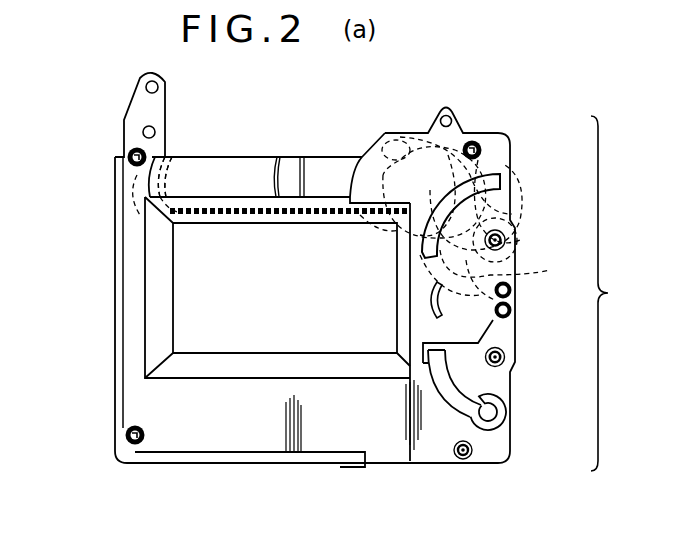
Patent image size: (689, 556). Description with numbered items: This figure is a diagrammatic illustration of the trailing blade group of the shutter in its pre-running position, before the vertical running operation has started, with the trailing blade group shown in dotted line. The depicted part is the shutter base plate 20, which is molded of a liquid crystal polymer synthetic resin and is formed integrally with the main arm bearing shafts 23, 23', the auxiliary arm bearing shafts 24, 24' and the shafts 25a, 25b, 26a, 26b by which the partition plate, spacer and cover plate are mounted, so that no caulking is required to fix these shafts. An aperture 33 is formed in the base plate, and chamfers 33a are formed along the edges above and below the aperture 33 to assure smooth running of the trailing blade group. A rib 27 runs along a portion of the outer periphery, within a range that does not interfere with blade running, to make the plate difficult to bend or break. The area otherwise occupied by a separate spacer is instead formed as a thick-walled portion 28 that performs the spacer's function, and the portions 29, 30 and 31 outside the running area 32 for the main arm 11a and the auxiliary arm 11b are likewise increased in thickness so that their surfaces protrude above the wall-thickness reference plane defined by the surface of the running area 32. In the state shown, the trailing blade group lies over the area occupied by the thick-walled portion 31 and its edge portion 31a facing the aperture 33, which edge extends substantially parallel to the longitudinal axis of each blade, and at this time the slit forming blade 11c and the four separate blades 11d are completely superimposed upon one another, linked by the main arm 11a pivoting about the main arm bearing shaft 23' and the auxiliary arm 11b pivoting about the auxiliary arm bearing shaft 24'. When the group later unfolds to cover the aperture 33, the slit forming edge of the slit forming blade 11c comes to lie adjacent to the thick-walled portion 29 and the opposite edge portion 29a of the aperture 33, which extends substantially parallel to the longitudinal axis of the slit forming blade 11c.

The shutter base plate 20 is at (618, 304).
The thick-walled portion 28 is at (130, 323).
The thick-walled portion 31 is at (340, 160).
The edge portion 31a is at (277, 157).
The running area 32 is at (497, 165).
The aperture 33 is at (207, 353).
The chamfers 33a is at (293, 357).
The rib 27 is at (248, 462).
The thick-walled portion 29 is at (310, 413).
The edge portion 29a is at (376, 380).
The thick-walled portion 30 is at (487, 380).
The shaft 26a is at (128, 160).
The shaft 26b is at (135, 444).
The shaft 25a is at (482, 151).
The shaft 25b is at (465, 459).
The main arm bearing shaft 23 is at (533, 365).
The main arm bearing shaft 23' is at (534, 240).
The auxiliary arm bearing shaft 24 is at (538, 325).
The auxiliary arm bearing shaft 24' is at (540, 298).
The main arm 11a is at (512, 214).
The auxiliary arm 11b is at (505, 276).
The separate blades 11d is at (217, 170).
The slit forming blade 11c is at (165, 177).